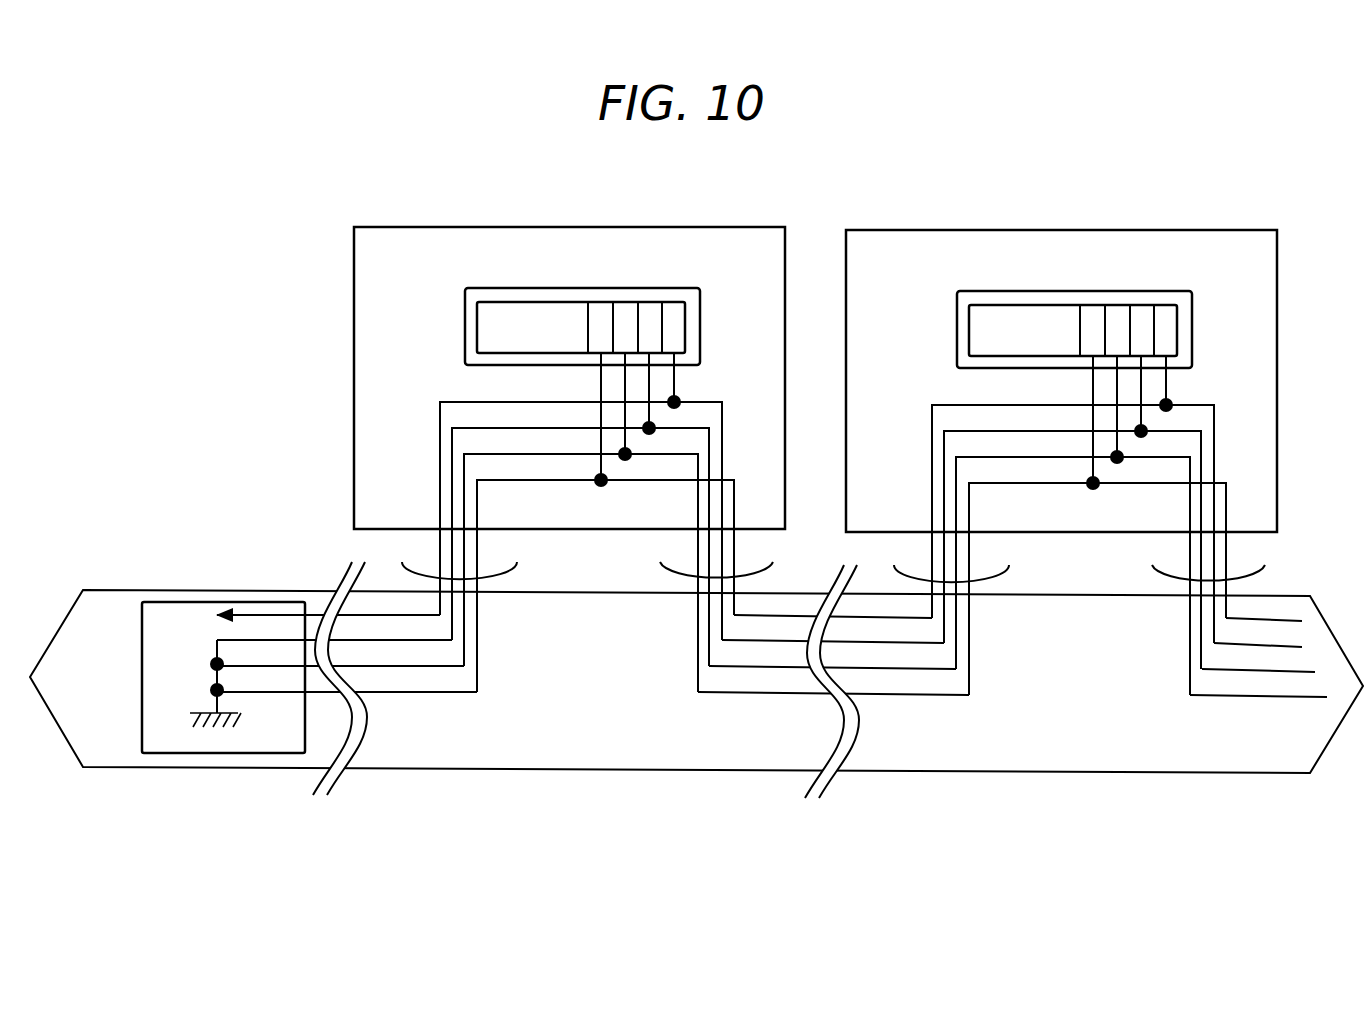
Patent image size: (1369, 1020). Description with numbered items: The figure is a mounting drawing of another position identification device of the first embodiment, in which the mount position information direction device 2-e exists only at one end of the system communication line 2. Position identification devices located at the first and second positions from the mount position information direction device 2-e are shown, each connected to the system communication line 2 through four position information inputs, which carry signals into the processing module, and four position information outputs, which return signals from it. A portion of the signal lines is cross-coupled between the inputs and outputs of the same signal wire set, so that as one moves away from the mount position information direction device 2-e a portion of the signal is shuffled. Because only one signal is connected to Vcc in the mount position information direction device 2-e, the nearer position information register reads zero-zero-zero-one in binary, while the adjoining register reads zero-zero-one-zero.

The system communication line 2 is at (142, 591).
The mount position information direction device 2-e is at (142, 677).